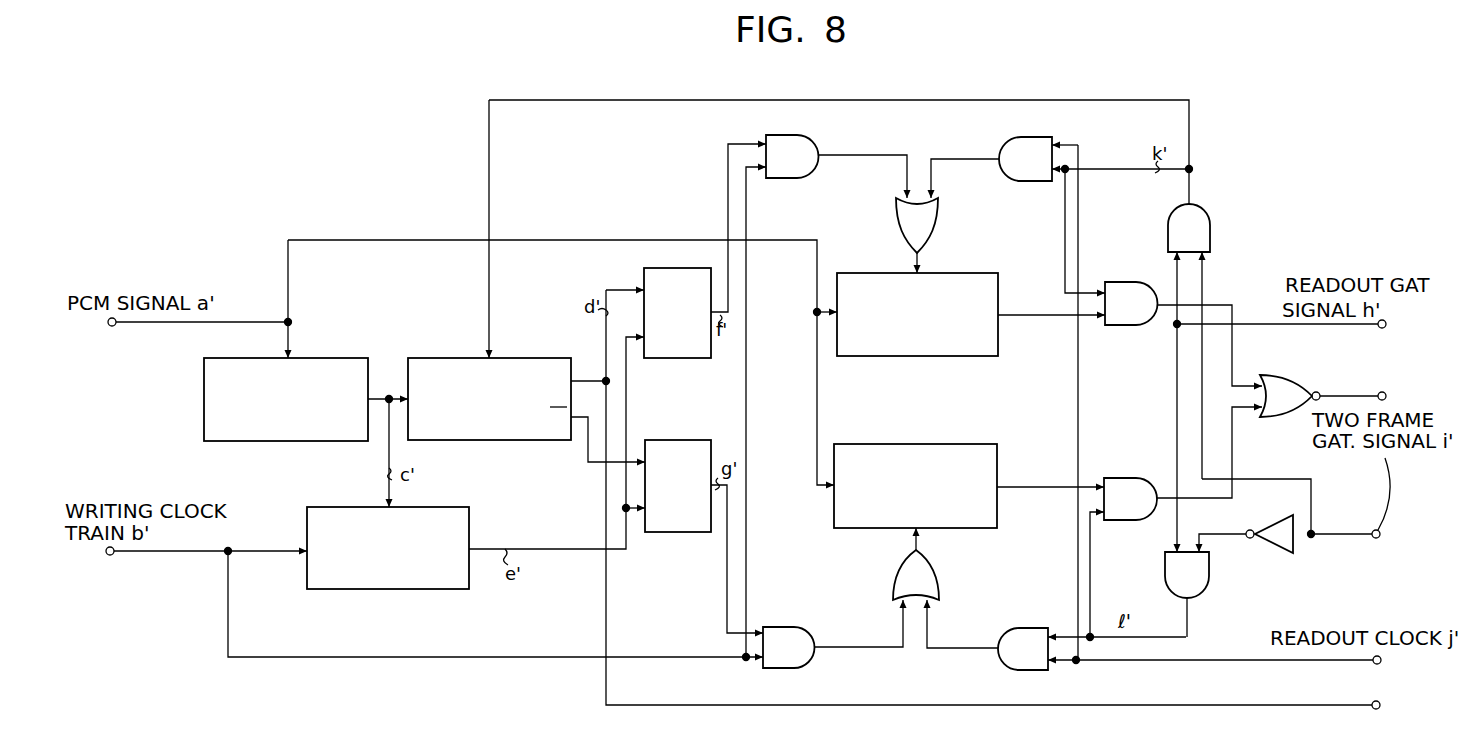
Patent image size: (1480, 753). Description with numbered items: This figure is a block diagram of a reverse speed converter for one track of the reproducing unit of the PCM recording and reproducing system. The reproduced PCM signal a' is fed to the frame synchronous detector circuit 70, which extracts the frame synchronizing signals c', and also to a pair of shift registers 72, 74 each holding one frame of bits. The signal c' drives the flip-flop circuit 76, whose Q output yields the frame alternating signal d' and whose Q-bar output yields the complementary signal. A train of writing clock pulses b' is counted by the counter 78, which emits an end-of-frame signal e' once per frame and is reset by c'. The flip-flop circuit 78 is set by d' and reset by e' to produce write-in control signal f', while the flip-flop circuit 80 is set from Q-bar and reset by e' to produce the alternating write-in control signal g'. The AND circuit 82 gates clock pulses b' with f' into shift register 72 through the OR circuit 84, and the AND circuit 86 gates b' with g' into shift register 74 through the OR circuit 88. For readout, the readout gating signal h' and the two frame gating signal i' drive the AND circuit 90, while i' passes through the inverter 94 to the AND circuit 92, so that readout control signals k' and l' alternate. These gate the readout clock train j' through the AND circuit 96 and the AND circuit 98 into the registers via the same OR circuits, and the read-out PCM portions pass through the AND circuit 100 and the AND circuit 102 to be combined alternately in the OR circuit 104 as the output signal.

The frame synchronous detector circuit 70 is at (357, 357).
The shift register 72 is at (975, 255).
The shift register 74 is at (981, 444).
The flip-flop circuit 76 is at (551, 357).
The counter / flip-flop circuit 78 is at (697, 269).
The flip-flop circuit 80 is at (697, 440).
The AND circuit 82 is at (813, 143).
The OR circuit 84 is at (940, 212).
The AND circuit 86 is at (814, 642).
The OR circuit 88 is at (943, 562).
The AND circuit 90 is at (1210, 226).
The AND circuit 92 is at (1209, 580).
The inverter 94 is at (1266, 522).
The AND circuit 96 is at (1044, 138).
The AND circuit 98 is at (1035, 621).
The AND circuit 100 is at (1144, 278).
The AND circuit 102 is at (1130, 472).
The OR circuit 104 is at (1295, 376).